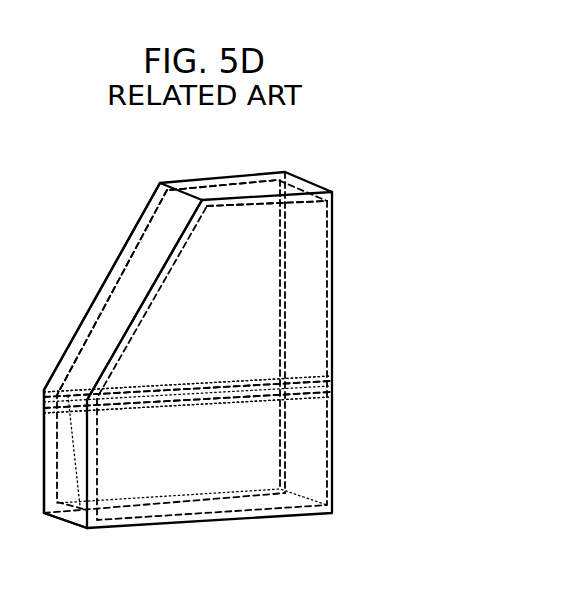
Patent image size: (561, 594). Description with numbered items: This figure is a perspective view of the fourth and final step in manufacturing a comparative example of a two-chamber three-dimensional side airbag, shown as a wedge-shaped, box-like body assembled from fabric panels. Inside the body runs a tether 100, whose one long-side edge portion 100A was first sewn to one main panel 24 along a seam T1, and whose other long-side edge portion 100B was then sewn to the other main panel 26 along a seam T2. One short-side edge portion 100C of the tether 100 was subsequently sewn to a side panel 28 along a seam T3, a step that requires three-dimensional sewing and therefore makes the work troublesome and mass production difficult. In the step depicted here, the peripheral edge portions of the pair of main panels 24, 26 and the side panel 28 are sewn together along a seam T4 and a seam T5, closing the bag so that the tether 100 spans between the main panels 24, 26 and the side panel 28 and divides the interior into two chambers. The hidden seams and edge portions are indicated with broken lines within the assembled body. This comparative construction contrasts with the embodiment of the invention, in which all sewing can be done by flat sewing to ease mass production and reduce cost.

The main panel 24 is at (181, 226).
The main panel 26 is at (104, 270).
The side panel 28 is at (141, 253).
The tether 100 is at (304, 380).
The long-side edge portion 100A is at (146, 418).
The long-side edge portion 100B is at (187, 384).
The short-side edge portion 100C is at (78, 512).
The seam T1 is at (236, 409).
The seam T2 is at (236, 385).
The seam T3 is at (65, 404).
The seam T4 is at (251, 204).
The seam T5 is at (221, 182).